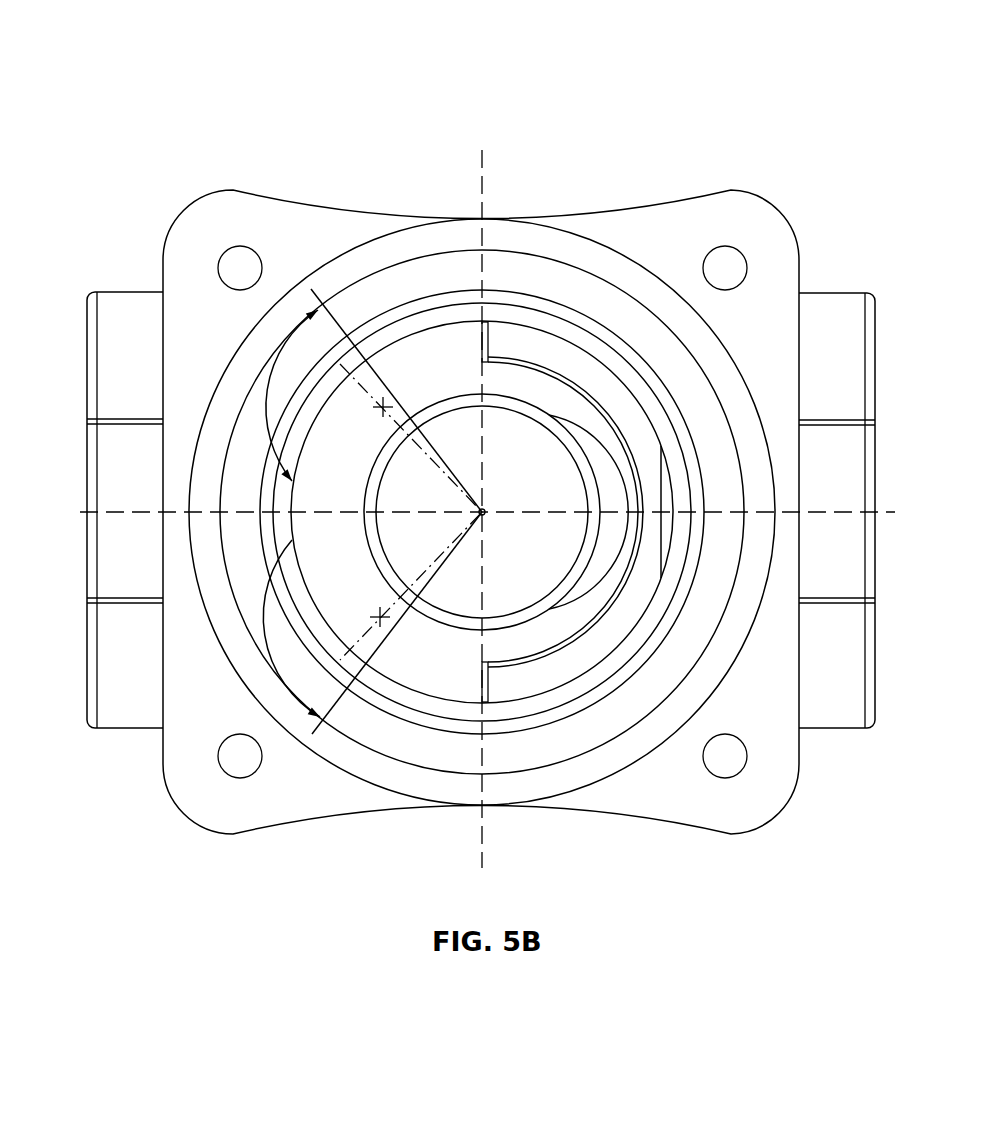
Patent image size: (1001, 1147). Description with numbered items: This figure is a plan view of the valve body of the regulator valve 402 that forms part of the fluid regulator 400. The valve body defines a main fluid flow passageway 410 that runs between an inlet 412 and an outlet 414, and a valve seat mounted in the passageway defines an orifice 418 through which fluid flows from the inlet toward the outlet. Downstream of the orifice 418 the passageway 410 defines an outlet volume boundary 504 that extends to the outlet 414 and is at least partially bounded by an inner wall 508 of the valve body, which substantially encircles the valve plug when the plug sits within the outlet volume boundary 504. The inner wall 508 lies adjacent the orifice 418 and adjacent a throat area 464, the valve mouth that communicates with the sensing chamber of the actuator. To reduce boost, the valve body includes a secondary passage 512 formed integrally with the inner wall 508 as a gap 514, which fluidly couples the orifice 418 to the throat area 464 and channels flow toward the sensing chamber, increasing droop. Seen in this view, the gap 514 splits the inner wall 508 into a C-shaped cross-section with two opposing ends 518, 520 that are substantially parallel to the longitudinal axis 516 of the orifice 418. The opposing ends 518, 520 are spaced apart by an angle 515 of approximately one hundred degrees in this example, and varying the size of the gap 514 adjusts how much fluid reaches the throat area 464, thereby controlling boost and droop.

The fluid regulator 400 is at (186, 40).
The regulator valve 402 is at (129, 221).
The main fluid flow passageway 410 is at (462, 383).
The inlet 412 is at (96, 547).
The outlet 414 is at (877, 470).
The orifice 418 is at (548, 412).
The throat area 464 is at (408, 318).
The outlet volume boundary 504 is at (470, 668).
The inner wall 508 is at (447, 328).
The secondary passage 512 is at (295, 478).
The gap 514 is at (293, 548).
The angle 515 is at (237, 612).
The longitudinal axis 516 is at (488, 511).
The first opposing end 518 is at (382, 366).
The second opposing end 520 is at (370, 664).